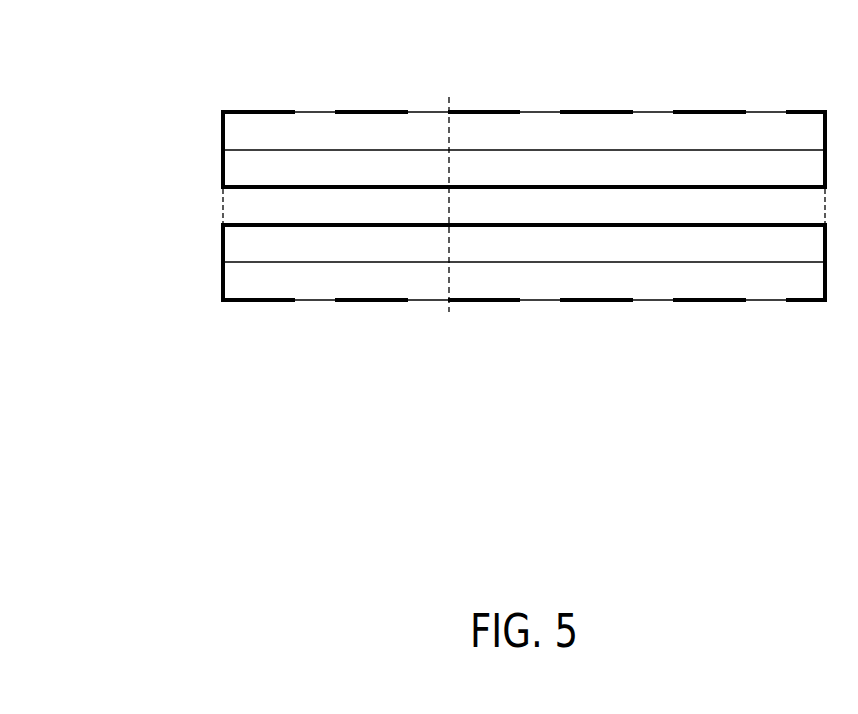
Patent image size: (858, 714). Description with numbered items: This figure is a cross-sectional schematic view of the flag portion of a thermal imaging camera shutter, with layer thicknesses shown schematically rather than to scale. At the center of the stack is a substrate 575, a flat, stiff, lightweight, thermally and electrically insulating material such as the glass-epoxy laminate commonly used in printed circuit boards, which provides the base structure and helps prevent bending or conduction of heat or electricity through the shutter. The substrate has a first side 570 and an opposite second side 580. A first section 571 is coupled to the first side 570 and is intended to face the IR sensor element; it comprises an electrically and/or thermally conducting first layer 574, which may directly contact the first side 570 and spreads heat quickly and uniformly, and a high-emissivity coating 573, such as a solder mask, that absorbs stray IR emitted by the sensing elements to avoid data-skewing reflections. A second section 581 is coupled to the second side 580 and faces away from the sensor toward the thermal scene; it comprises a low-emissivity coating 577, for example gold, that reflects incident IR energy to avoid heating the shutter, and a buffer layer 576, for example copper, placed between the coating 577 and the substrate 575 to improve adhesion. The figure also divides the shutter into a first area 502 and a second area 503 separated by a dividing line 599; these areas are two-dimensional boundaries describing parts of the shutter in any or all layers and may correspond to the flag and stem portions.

The first area 502 is at (392, 320).
The second area 503 is at (522, 320).
The first side of the substrate 570 is at (222, 225).
The first section 571 is at (280, 301).
The high-emissivity coating 573 is at (524, 281).
The first layer 574 is at (524, 243).
The substrate 575 is at (524, 206).
The buffer layer 576 is at (524, 168).
The low-emissivity coating 577 is at (524, 133).
The second side of the substrate 580 is at (223, 185).
The second section 581 is at (278, 108).
The dividing line 599 is at (449, 326).